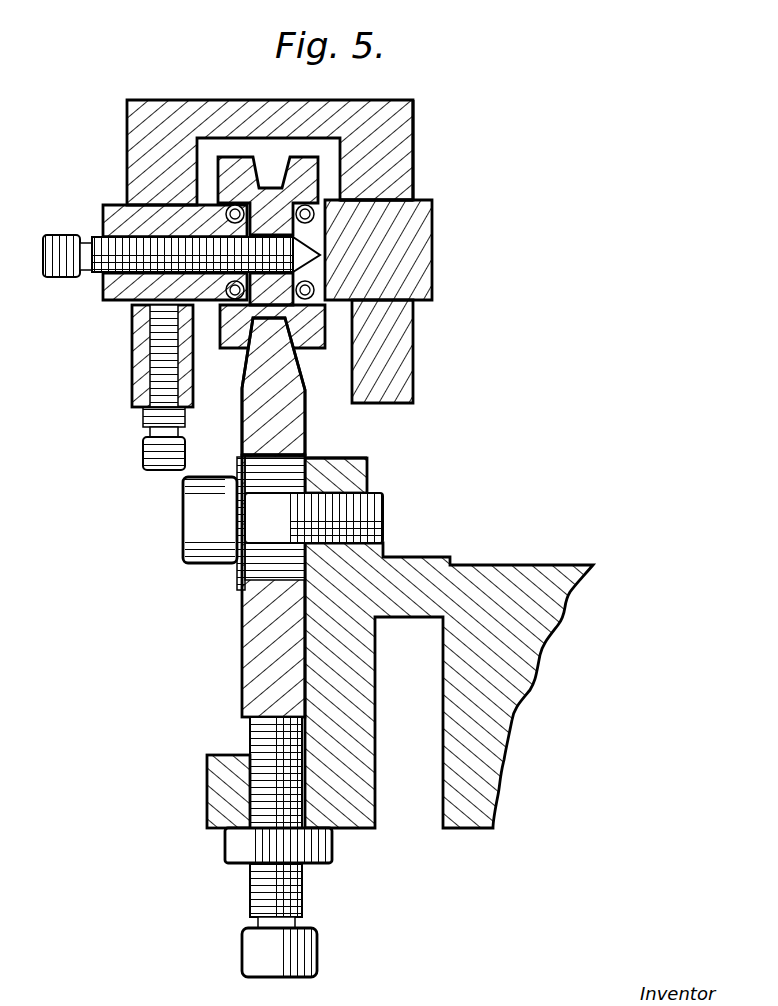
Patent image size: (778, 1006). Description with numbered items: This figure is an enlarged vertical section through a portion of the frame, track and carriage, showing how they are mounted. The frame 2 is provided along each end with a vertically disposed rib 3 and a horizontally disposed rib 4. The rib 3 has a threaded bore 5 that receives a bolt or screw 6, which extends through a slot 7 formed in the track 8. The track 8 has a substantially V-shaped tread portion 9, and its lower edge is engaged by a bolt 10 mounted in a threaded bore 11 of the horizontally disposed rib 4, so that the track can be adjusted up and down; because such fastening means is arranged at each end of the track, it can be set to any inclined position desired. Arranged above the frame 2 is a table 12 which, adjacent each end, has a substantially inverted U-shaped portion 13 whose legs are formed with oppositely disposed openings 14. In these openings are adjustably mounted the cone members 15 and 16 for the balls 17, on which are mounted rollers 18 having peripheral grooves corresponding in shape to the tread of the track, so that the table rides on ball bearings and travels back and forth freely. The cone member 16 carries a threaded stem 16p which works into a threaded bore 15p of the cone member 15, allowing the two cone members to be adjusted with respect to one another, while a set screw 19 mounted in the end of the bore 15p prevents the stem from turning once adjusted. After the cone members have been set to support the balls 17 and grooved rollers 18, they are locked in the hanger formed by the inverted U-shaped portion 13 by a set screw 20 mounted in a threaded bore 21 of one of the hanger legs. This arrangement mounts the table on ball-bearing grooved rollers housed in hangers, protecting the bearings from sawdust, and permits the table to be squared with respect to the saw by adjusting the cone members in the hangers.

The frame 2 is at (500, 712).
The vertically disposed rib 3 is at (363, 460).
The horizontally disposed rib 4 is at (225, 798).
The threaded bore 5 is at (345, 495).
The bolt or screw 6 is at (385, 520).
The slot 7 is at (262, 565).
The track 8 is at (262, 680).
The V-shaped tread portion 9 is at (264, 352).
The bolt 10 is at (265, 733).
The threaded bore 11 is at (212, 830).
The table 12 is at (203, 101).
The inverted U-shaped portion 13 is at (390, 168).
The openings 14 is at (415, 193).
The cone member 15 is at (122, 218).
The threaded bore 15p is at (177, 233).
The cone member 16 is at (410, 243).
The threaded stem 16p is at (172, 275).
The balls 17 is at (330, 295).
The rollers 18 is at (330, 157).
The set screw 19 is at (92, 272).
The set screw 20 is at (160, 375).
The threaded bore 21 is at (150, 345).